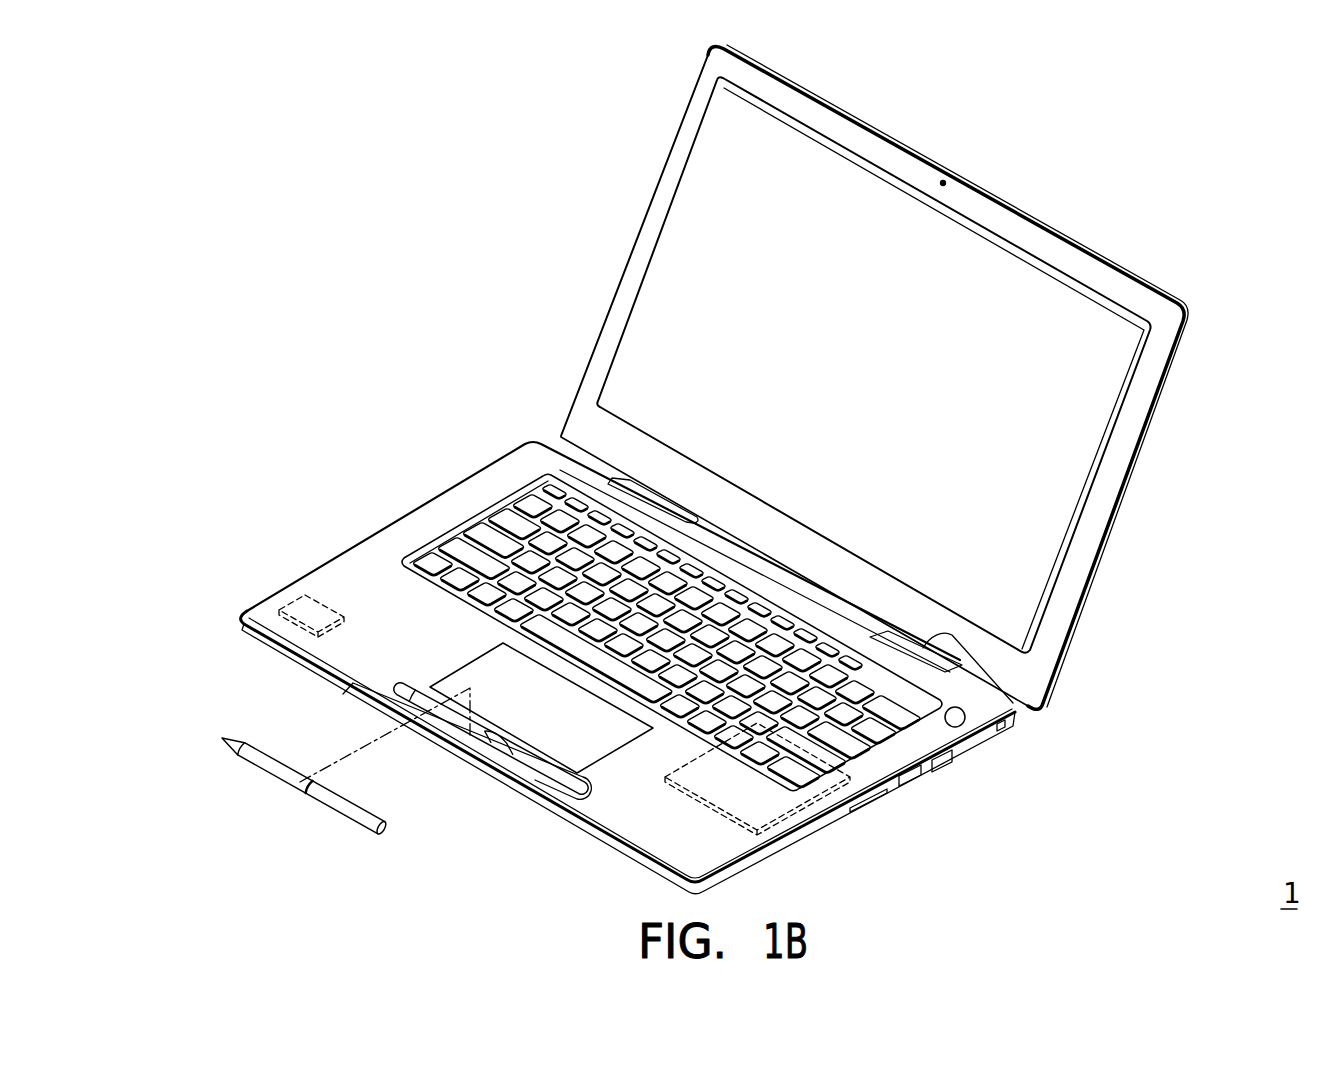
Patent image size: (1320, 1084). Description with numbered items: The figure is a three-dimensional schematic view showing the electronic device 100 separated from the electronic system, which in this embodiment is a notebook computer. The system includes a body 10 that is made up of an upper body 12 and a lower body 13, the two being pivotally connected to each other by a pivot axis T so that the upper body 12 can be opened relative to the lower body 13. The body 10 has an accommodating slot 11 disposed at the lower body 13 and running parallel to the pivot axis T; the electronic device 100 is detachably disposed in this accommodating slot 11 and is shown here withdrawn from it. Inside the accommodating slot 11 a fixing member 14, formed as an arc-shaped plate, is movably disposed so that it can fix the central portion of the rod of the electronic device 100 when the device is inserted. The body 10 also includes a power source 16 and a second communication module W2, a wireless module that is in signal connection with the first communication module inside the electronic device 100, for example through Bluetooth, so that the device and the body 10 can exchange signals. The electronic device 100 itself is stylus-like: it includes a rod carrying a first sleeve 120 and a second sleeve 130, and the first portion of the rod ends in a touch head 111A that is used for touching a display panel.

The body 10 is at (1188, 500).
The upper body 12 is at (623, 290).
The lower body 13 is at (371, 524).
The accommodating slot 11 is at (401, 687).
The fixing member 14 is at (502, 742).
The power source 16 is at (811, 810).
The second communication module W2 is at (301, 600).
The pivot axis T is at (1040, 708).
The electronic device 100 is at (216, 861).
The touch head 111A is at (220, 739).
The first sleeve 120 is at (290, 779).
The second sleeve 130 is at (330, 801).